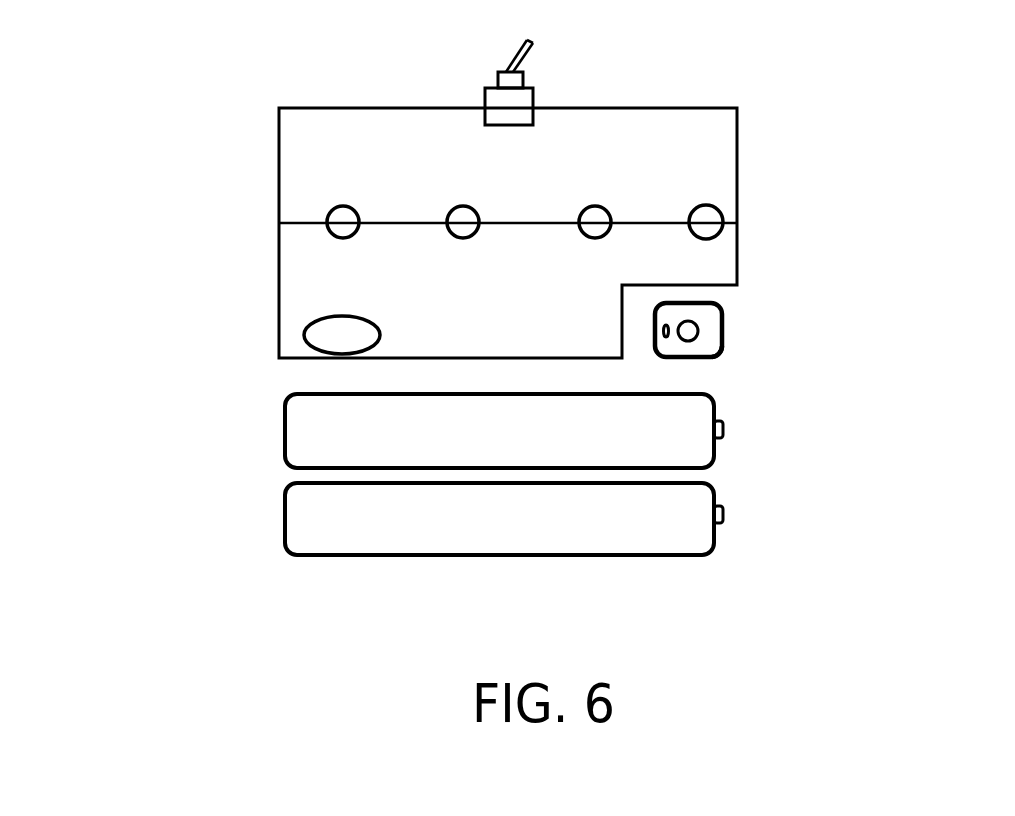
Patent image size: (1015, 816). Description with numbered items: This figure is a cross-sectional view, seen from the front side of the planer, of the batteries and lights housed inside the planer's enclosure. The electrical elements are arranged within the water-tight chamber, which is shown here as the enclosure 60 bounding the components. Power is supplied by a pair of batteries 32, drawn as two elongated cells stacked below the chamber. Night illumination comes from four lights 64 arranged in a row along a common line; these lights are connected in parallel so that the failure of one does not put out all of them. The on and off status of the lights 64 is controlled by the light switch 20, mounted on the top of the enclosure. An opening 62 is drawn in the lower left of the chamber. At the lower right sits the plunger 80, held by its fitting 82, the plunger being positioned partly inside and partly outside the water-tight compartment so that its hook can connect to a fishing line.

The light switch 20 is at (531, 52).
The housing 60 is at (279, 141).
The light 64 is at (705, 201).
The speaker opening 62 is at (303, 331).
The plunger 80 is at (722, 324).
The fitting for plunger 82 is at (718, 352).
The batteries 32 is at (285, 430).